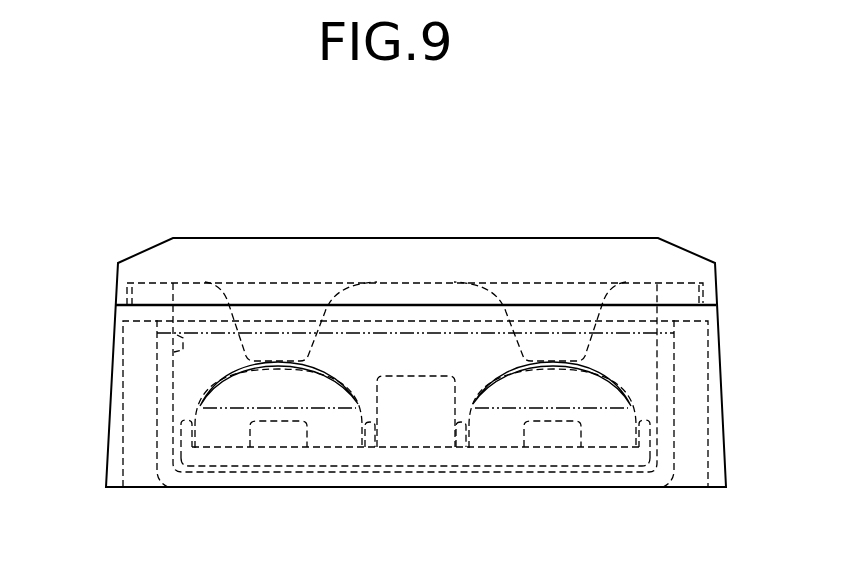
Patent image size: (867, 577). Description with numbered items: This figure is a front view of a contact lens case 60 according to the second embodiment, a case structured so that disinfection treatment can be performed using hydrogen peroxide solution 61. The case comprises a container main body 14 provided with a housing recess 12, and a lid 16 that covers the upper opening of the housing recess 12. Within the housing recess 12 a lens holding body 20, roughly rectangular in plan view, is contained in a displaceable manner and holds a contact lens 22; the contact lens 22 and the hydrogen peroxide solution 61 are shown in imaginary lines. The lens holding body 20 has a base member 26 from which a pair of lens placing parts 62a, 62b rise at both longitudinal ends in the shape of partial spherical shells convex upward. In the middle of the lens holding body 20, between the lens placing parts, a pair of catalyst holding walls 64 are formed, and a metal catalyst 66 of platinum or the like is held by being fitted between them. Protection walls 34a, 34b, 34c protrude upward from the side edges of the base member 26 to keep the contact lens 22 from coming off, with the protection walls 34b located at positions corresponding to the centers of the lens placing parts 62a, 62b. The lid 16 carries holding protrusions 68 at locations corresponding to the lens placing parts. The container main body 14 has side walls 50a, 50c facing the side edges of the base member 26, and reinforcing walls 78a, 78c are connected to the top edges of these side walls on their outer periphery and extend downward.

The contact lens case 60 is at (657, 174).
The container main body 14 is at (737, 477).
The lid 16 is at (408, 252).
The housing recess 12 is at (177, 335).
The lens holding body 20 is at (649, 464).
The contact lens 22 is at (229, 400).
The base member 26 is at (514, 460).
The protection wall 34a is at (180, 437).
The protection wall 34b is at (297, 440).
The protection wall 34c is at (653, 434).
The side wall 50a is at (168, 379).
The side wall 50c is at (656, 370).
The hydrogen peroxide solution 61 is at (208, 343).
The lens placing part 62a is at (237, 378).
The lens placing part 62b is at (603, 378).
The catalyst holding wall 64 is at (371, 416).
The metal catalyst 66 is at (415, 407).
The holding protrusion 68 is at (275, 342).
The reinforcing wall 78a is at (116, 416).
The reinforcing wall 78c is at (718, 413).